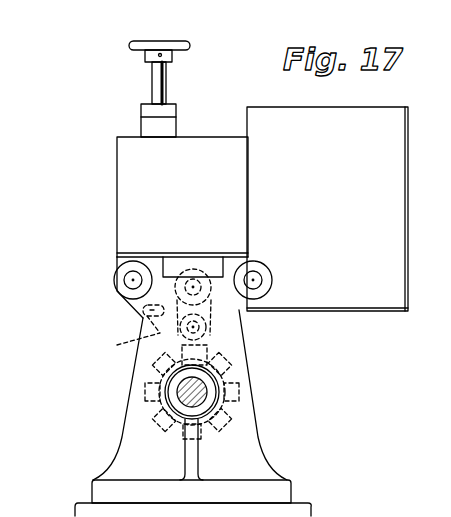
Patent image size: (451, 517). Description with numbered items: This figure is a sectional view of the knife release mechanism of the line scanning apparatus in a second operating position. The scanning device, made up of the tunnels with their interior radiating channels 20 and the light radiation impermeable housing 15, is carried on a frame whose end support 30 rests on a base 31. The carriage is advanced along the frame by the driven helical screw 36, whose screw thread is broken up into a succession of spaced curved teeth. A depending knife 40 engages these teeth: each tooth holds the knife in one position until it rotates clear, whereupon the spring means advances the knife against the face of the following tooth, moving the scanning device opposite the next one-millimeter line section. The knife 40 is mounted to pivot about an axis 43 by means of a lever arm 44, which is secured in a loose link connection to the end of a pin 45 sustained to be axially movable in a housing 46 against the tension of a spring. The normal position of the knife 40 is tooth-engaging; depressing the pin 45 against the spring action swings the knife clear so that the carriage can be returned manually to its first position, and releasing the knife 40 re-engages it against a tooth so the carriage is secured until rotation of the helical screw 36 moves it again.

The housing 15 is at (212, 137).
The radiating channels 20 is at (321, 115).
The end support 30 is at (253, 430).
The base 31 is at (295, 503).
The helical screw 36 is at (236, 373).
The knife 40 is at (212, 344).
The axis 43 is at (175, 338).
The lever arm 44 is at (170, 330).
The pin 45 is at (153, 80).
The housing 46 is at (150, 120).